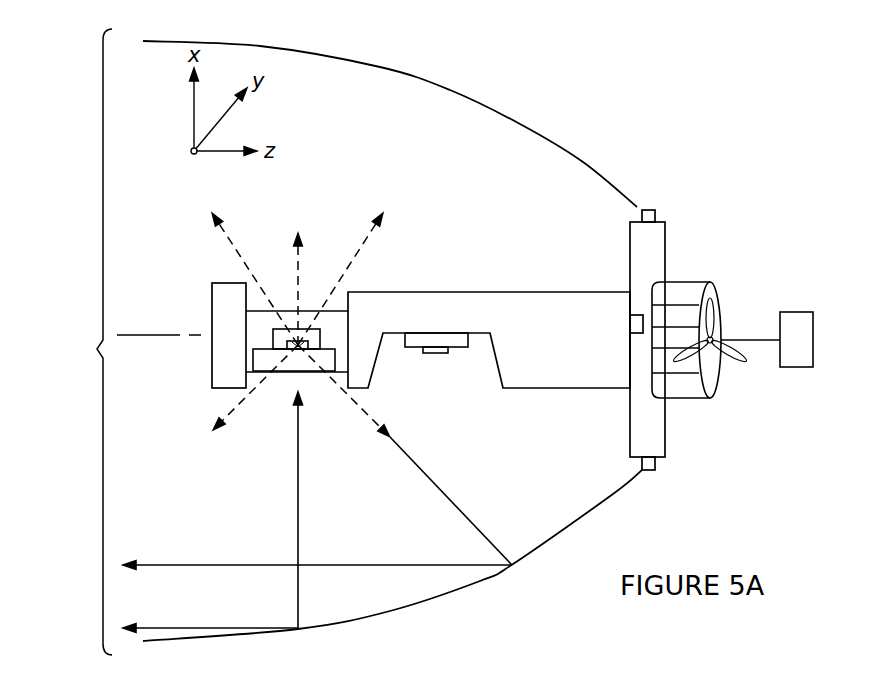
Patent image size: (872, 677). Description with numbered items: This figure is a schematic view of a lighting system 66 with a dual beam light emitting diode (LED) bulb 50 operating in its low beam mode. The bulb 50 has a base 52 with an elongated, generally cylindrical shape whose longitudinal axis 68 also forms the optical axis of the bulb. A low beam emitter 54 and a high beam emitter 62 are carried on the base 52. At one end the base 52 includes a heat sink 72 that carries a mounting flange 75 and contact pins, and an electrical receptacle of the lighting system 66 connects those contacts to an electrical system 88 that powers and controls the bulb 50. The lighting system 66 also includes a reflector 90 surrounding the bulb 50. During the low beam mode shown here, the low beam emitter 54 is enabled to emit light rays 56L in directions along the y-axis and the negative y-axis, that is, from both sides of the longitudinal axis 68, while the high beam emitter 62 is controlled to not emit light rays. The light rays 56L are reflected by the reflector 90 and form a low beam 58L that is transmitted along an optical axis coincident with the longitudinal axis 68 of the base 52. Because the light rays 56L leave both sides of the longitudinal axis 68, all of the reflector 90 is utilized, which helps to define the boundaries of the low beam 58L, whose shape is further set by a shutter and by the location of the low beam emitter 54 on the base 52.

The dual beam light emitting diode (LED) bulb 50 is at (548, 243).
The base 52 is at (465, 298).
The low beam emitter 54 is at (268, 400).
The light rays 56L is at (353, 260).
The low beam 58L is at (82, 342).
The high beam emitter 62 is at (467, 362).
The lighting system 66 is at (510, 73).
The longitudinal axis 68 is at (150, 333).
The heat sink 72 is at (712, 385).
The mounting flange 75 is at (653, 247).
The electrical system 88 is at (798, 315).
The reflector 90 is at (635, 200).